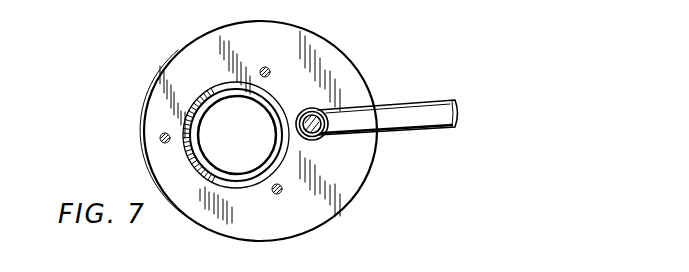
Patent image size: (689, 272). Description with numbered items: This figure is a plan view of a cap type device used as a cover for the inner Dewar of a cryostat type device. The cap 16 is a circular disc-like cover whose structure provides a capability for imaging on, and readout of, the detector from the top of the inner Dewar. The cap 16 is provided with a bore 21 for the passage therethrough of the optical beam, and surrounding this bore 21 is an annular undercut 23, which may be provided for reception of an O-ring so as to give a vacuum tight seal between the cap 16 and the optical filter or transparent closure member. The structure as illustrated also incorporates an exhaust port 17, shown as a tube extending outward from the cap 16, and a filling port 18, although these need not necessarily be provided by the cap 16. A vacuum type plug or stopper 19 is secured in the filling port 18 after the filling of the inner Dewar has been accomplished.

The cap 16 is at (347, 188).
The exhaust port 17 is at (421, 120).
The filling port 18 is at (302, 141).
The vacuum type plug or stopper 19 is at (313, 134).
The bore 21 is at (270, 117).
The annular undercut 23 is at (229, 84).